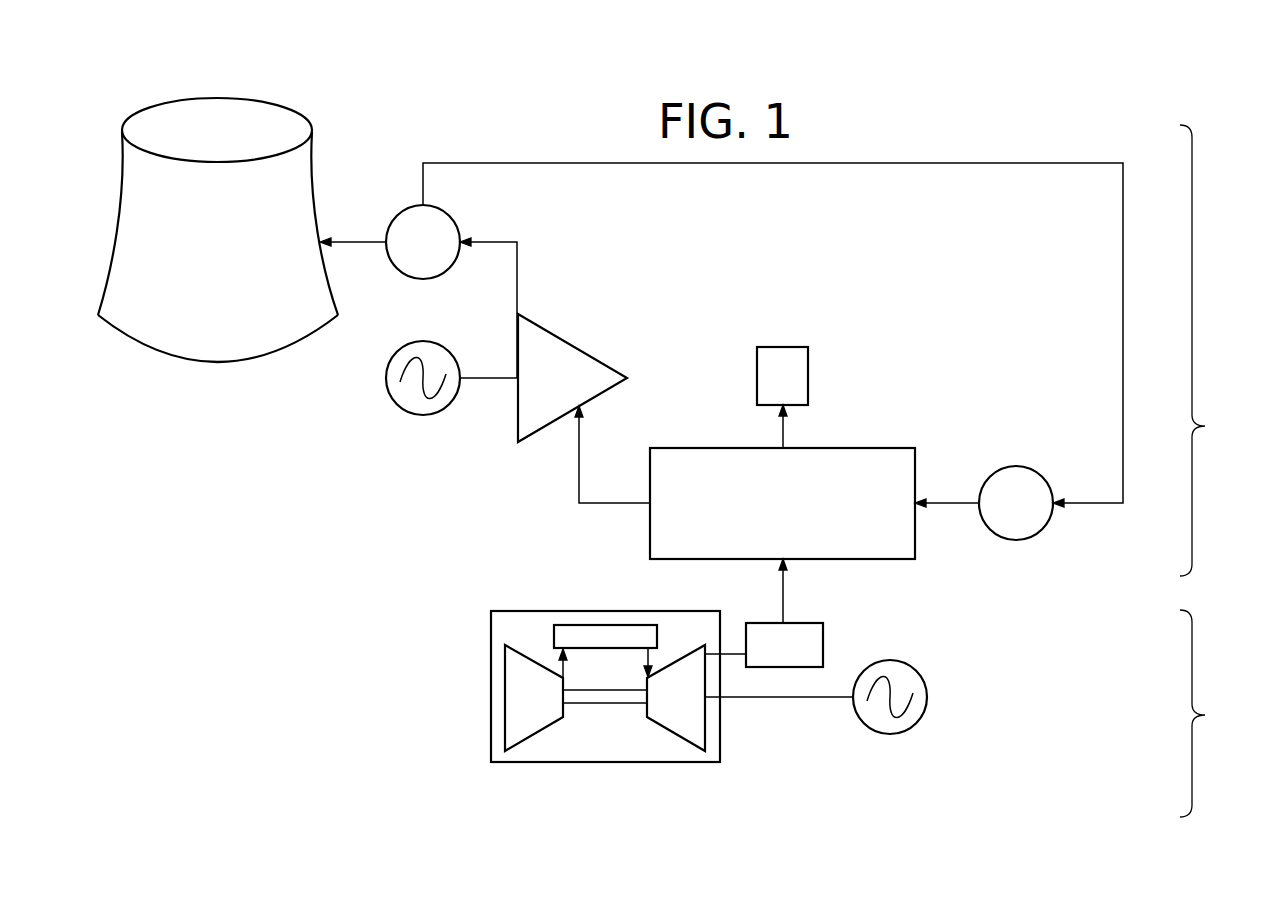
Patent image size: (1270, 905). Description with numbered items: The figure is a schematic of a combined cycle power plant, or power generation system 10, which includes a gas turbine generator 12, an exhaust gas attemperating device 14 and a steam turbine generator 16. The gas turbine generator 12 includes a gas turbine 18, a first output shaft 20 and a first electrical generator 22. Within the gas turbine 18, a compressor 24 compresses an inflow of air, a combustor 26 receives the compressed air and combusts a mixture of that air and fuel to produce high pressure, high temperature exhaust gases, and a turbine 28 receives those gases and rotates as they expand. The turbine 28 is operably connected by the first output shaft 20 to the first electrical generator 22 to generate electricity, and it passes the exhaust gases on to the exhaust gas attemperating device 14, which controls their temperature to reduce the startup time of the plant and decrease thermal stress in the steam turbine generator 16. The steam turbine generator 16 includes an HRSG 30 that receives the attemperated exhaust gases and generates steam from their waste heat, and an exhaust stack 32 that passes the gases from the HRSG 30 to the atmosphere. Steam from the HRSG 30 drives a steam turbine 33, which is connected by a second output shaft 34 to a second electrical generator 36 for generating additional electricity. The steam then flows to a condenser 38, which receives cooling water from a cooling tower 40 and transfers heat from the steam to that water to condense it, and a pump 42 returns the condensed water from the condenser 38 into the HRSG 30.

The power generation system 10 is at (338, 496).
The gas turbine generator 12 is at (1212, 713).
The exhaust gas attemperating device 14 is at (823, 635).
The steam turbine generator 16 is at (1212, 350).
The gas turbine 18 is at (508, 611).
The first output shaft 20 is at (760, 698).
The first electrical generator 22 is at (918, 673).
The compressor 24 is at (538, 735).
The combustor 26 is at (607, 625).
The turbine 28 is at (676, 735).
The HRSG 30 is at (877, 448).
The exhaust stack 32 is at (808, 376).
The steam turbine 33 is at (542, 322).
The second output shaft 34 is at (480, 378).
The second electrical generator 36 is at (405, 412).
The condenser 38 is at (448, 208).
The cooling tower 40 is at (120, 225).
The pump 42 is at (1013, 540).